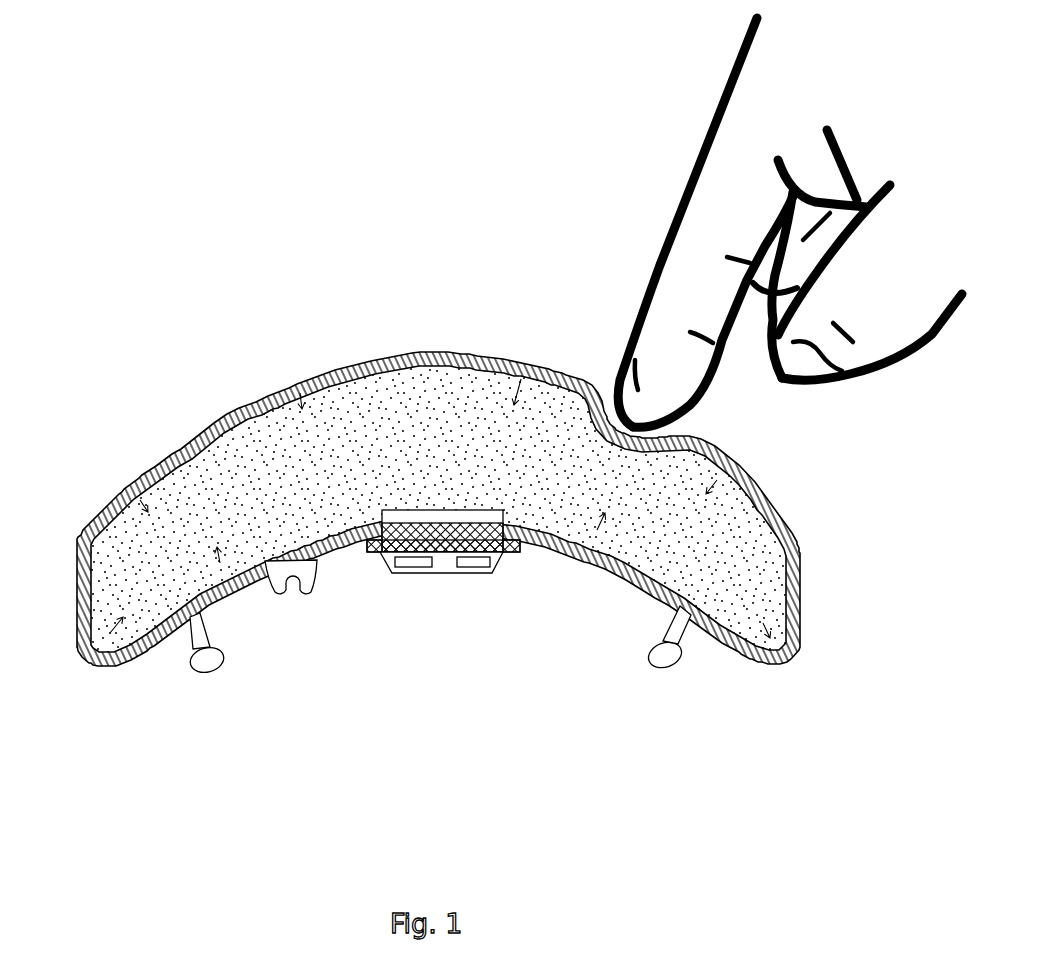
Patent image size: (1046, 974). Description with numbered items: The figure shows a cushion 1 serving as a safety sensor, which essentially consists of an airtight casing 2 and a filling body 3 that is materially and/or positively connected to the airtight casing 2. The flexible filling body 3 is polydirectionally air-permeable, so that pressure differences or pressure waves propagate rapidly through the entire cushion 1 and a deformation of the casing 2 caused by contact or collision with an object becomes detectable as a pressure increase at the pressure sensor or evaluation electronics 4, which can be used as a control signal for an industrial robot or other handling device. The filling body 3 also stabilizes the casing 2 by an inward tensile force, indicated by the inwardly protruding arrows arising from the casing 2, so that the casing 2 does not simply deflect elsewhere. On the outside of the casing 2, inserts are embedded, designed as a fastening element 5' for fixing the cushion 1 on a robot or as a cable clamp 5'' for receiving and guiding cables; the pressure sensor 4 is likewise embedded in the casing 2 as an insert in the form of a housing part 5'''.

The cushion 1 is at (137, 453).
The airtight casing 2 is at (403, 355).
The filling body 3 is at (253, 437).
The pressure sensor or evaluation electronics 4 is at (442, 515).
The fastening element 5' is at (439, 684).
The cable clamp 5'' is at (301, 612).
The housing part 5''' is at (461, 630).